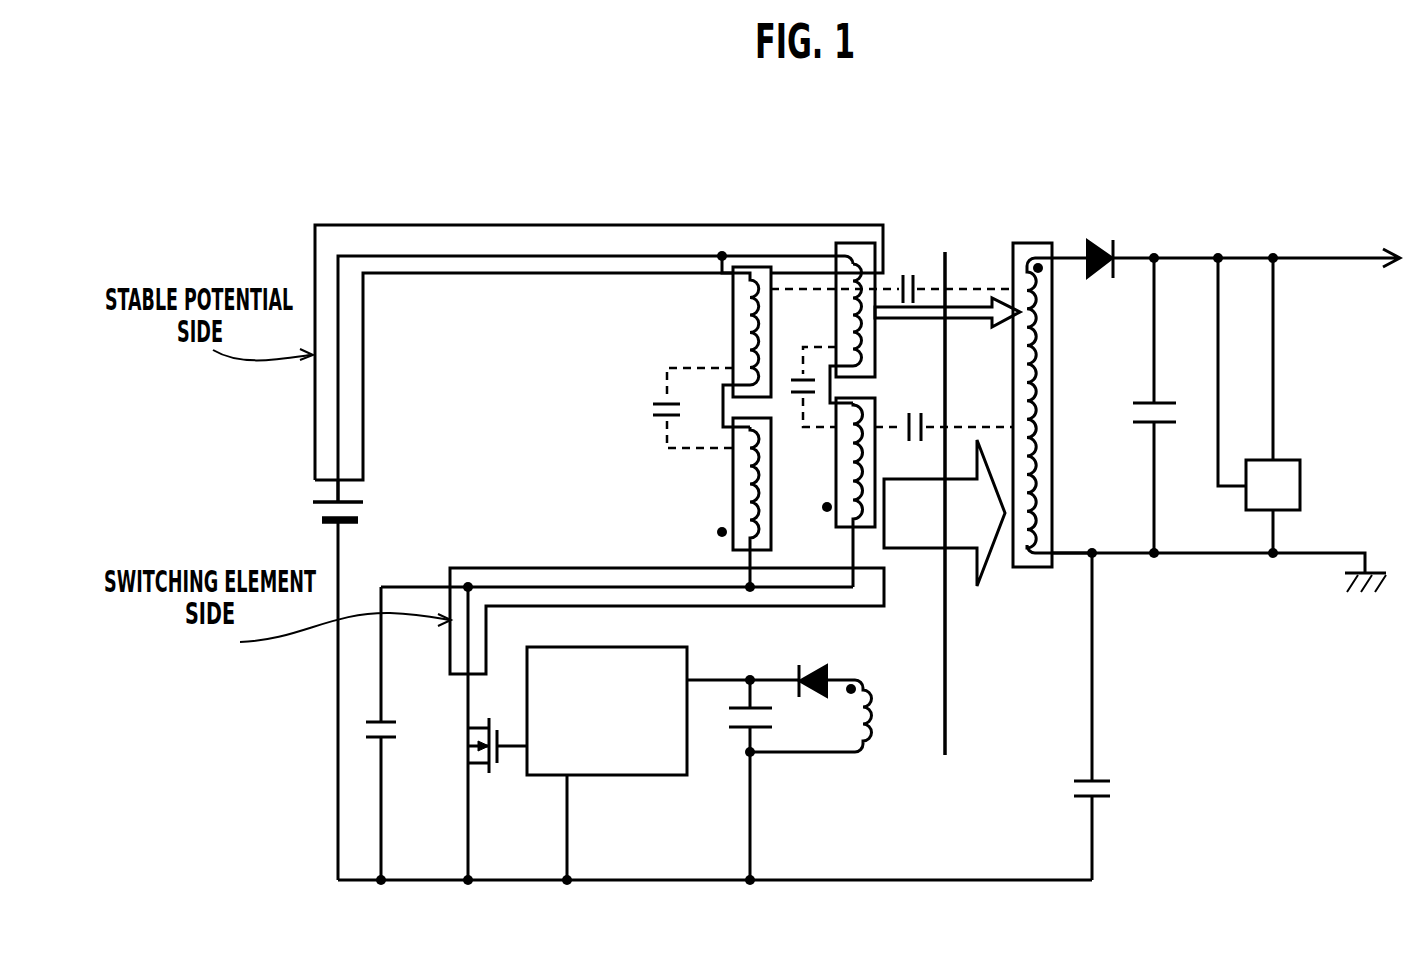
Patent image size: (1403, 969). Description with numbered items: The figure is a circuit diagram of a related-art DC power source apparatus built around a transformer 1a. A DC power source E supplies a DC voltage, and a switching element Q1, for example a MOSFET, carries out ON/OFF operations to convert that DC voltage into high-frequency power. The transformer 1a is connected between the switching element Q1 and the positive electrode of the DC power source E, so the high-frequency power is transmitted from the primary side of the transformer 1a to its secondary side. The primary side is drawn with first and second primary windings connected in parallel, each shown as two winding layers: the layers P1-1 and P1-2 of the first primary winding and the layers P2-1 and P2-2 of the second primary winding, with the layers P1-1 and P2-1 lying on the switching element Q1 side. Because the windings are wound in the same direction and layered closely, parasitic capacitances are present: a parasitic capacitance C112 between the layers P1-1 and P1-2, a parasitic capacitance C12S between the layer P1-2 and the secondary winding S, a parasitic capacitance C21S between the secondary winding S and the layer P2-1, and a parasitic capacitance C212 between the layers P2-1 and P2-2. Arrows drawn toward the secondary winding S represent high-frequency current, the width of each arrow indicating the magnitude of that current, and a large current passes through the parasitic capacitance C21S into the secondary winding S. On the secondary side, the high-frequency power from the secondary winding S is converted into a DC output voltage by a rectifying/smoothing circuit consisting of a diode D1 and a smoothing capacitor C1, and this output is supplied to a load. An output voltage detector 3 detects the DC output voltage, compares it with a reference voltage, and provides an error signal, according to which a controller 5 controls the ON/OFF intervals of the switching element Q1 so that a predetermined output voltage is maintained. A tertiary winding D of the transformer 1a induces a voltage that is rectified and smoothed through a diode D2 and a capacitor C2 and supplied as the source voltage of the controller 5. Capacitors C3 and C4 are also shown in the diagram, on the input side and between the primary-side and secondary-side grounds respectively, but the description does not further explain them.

The transformer 1a is at (958, 232).
The output voltage detector 3 is at (1290, 460).
The controller 5 is at (640, 776).
The DC power source E is at (349, 527).
The switching element Q1 is at (495, 733).
The smoothing capacitor C1 is at (1164, 405).
The capacitor C2 is at (760, 730).
The input capacitor C3 is at (395, 736).
The capacitor between primary and secondary grounds C4 is at (1104, 716).
The parasitic capacitance C112 is at (660, 408).
The parasitic capacitance C212 is at (800, 374).
The parasitic capacitance C12S is at (924, 268).
The parasitic capacitance C21S is at (915, 410).
The tertiary winding D is at (811, 716).
The diode D1 is at (1103, 242).
The diode D2 is at (815, 662).
The winding layer P1-1 is at (735, 505).
The winding layer P1-2 is at (735, 339).
The winding layer P2-1 is at (838, 492).
The winding layer P2-2 is at (836, 323).
The secondary winding S is at (1052, 405).